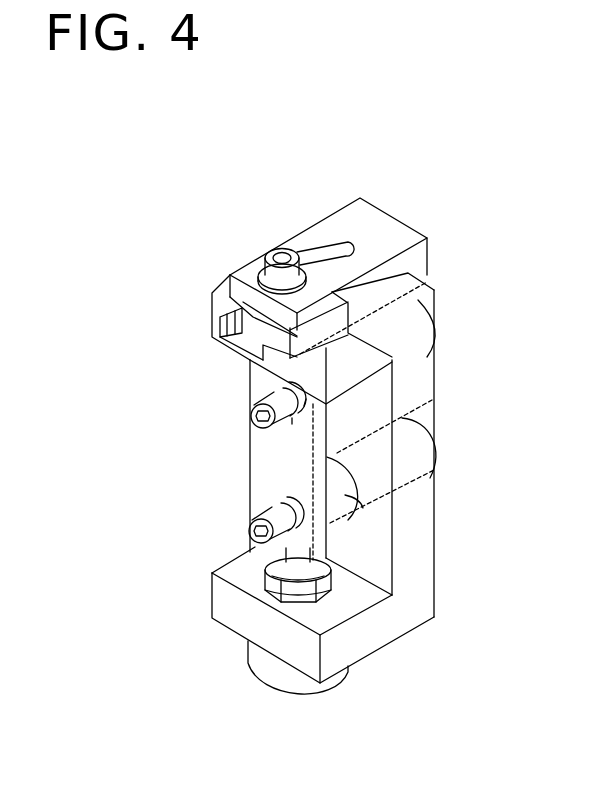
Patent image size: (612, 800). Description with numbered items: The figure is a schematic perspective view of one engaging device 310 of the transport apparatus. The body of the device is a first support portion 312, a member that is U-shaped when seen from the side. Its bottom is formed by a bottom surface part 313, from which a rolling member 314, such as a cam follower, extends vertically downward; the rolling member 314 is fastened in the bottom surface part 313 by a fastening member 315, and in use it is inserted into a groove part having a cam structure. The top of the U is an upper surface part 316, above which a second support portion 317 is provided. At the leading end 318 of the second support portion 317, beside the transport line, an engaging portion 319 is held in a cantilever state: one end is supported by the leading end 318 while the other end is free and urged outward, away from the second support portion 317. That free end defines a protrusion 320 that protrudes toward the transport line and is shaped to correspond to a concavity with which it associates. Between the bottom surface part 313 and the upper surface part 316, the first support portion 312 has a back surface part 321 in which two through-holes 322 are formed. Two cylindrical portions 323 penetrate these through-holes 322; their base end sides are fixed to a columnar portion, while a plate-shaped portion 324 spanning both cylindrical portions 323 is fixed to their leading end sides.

The engaging device 310 is at (470, 192).
The first support portion 312 is at (445, 383).
The bottom surface part 313 is at (370, 630).
The rolling member 314 is at (297, 686).
The fastening member 315 is at (252, 572).
The upper surface part 316 is at (368, 352).
The second support portion 317 is at (362, 222).
The leading end 318 is at (248, 268).
The engaging portion 319 is at (222, 288).
The protrusion 320 is at (212, 325).
The back surface part 321 is at (415, 553).
The through-holes 322 is at (344, 405).
The cylindrical portions 323 is at (395, 368).
The plate-shaped portion 324 is at (272, 465).